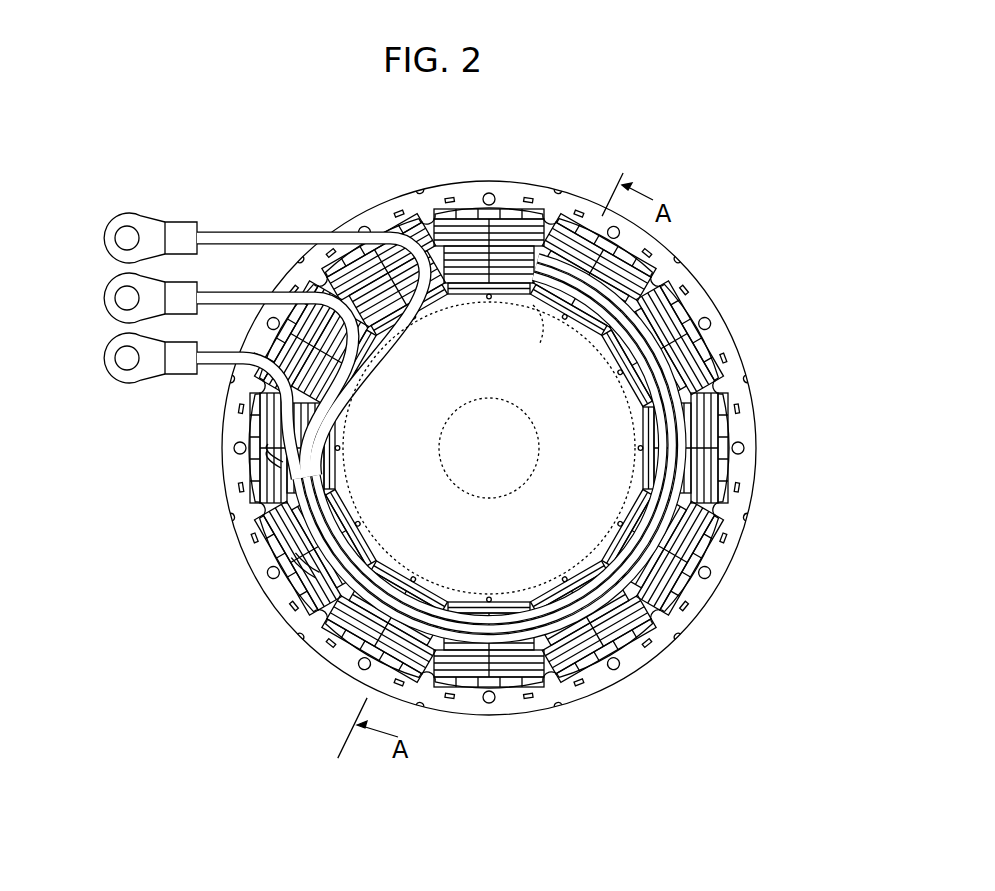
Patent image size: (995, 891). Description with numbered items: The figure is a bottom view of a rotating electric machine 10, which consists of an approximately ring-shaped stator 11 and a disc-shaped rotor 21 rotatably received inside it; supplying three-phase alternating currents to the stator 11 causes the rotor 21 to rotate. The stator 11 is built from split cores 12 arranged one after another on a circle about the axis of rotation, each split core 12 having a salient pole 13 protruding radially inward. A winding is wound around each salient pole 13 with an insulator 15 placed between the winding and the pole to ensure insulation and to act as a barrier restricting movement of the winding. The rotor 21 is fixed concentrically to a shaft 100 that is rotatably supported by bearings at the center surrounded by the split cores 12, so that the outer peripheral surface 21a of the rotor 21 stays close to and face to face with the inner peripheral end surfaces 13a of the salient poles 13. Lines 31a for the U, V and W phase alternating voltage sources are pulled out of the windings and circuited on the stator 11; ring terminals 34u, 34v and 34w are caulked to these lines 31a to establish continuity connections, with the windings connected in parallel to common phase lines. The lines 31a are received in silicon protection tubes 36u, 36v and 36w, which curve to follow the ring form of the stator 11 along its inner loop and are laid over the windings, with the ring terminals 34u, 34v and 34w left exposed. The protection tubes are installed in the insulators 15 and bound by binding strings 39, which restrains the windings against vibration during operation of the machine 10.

The rotating electric machine 10 is at (722, 177).
The stator 11 is at (740, 363).
The split core 12 is at (750, 403).
The salient pole 13 is at (302, 542).
The inner peripheral end surface 13a is at (353, 516).
The insulator 15 is at (543, 600).
The rotor 21 is at (500, 371).
The outer peripheral surface 21a is at (539, 326).
The line 31a is at (300, 586).
The ring terminal 34w is at (108, 220).
The ring terminal 34v is at (108, 280).
The ring terminal 34u is at (108, 340).
The protection tube 36w is at (668, 436).
The protection tube 36v is at (683, 462).
The protection tube 36u is at (690, 483).
The binding string 39 is at (283, 477).
The shaft 100 is at (506, 455).